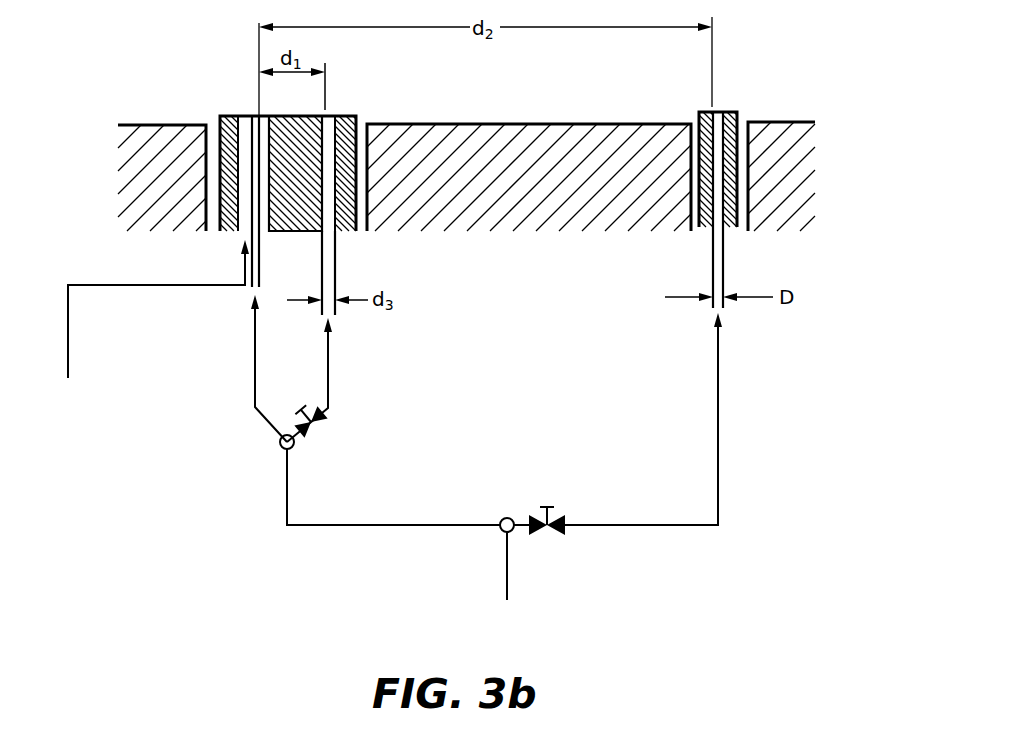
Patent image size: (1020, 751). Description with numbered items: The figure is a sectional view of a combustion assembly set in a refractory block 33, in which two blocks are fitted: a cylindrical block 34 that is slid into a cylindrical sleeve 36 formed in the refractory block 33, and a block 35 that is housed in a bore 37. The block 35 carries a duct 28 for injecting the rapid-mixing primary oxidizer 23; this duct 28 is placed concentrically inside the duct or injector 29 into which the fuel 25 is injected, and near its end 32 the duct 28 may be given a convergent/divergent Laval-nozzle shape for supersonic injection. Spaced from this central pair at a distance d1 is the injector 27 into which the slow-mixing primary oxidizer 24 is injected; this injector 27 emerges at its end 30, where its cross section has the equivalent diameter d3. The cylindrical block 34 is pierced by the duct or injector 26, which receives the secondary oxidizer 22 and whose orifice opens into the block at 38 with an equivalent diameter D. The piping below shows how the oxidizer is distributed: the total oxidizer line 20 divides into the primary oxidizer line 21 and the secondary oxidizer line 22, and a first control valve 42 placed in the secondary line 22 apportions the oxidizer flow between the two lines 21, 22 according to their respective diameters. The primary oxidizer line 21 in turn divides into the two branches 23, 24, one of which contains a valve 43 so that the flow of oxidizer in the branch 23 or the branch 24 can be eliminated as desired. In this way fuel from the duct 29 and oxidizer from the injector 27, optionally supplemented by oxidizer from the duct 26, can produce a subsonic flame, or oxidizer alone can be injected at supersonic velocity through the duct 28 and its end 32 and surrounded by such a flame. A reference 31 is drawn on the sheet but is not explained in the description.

The total oxidizer line 20 is at (505, 566).
The primary oxidizer line 21 is at (386, 527).
The secondary oxidizer line 22 is at (640, 525).
The rapid-mixing primary oxidizer line 23 is at (254, 360).
The slow-mixing primary oxidizer line 24 is at (332, 343).
The fuel 25 is at (130, 285).
The duct 26 is at (726, 242).
The injector 27 is at (338, 253).
The duct 28 is at (261, 254).
The duct 29 is at (282, 226).
The end of injector 30 is at (330, 113).
The annular passage wall 31 is at (228, 113).
The end of injector 28 32 is at (252, 112).
The refractory block 33 is at (136, 138).
The cylindrical block 34 is at (728, 112).
The block 35 is at (302, 113).
The cylindrical sleeve 36 is at (695, 127).
The bore 37 is at (212, 132).
The orifice 38 is at (716, 112).
The first control valve 42 is at (545, 535).
The valve 43 is at (320, 418).